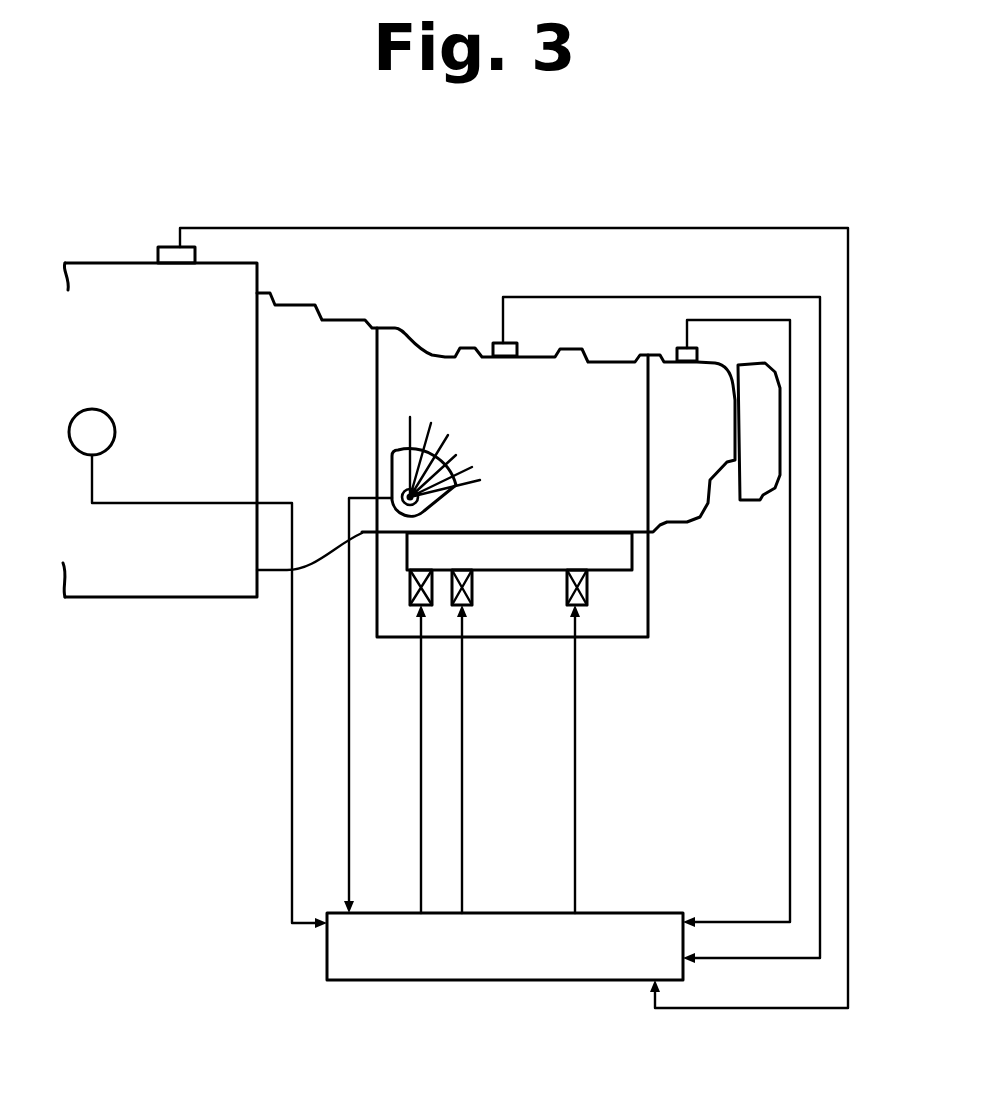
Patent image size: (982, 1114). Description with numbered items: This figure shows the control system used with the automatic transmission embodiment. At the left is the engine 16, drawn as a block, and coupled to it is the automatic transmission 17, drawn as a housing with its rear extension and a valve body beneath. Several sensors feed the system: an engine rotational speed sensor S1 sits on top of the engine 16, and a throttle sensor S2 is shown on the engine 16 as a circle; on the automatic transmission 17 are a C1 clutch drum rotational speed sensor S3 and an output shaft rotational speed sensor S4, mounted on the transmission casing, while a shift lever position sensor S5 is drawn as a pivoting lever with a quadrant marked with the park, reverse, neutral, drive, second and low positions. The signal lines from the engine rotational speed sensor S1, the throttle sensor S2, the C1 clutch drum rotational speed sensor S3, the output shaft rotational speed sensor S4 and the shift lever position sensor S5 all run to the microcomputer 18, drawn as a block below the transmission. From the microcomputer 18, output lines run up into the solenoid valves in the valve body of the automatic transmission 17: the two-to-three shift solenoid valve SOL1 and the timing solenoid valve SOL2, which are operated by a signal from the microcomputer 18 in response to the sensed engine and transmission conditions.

The engine 16 is at (135, 605).
The automatic transmission 17 is at (428, 345).
The microcomputer 18 is at (518, 982).
The engine rotational speed sensor S1 is at (195, 254).
The throttle sensor S2 is at (115, 432).
The C1 clutch drum rotational speed sensor S3 is at (515, 345).
The output shaft rotational speed sensor S4 is at (697, 352).
The shift lever position sensor S5 is at (421, 506).
The 2→3 shift solenoid valve SOL1 is at (428, 608).
The timing solenoid valve SOL2 is at (586, 608).